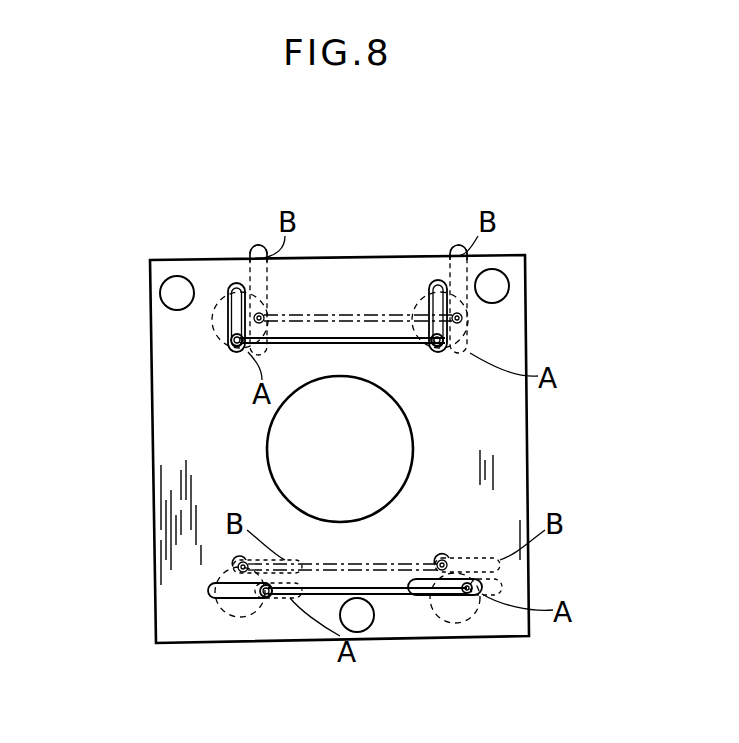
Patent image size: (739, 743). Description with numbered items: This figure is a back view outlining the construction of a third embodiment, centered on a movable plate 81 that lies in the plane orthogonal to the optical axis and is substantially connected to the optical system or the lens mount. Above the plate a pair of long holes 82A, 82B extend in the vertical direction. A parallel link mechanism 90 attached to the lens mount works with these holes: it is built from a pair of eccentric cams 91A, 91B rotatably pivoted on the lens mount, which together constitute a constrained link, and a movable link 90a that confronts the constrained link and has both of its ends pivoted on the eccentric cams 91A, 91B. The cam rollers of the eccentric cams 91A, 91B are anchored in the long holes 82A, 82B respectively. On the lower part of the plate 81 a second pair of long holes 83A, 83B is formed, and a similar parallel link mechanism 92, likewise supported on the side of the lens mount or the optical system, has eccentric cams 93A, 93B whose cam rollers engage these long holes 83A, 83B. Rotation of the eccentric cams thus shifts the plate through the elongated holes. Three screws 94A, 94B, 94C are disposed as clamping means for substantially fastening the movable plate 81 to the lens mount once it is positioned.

The movable plate 81 is at (527, 448).
The long hole 82A is at (237, 352).
The long hole 82B is at (440, 355).
The long hole 83A is at (222, 600).
The long hole 83B is at (455, 608).
The parallel link mechanism 90 is at (340, 312).
The movable link 90a is at (400, 344).
The eccentric cam 91A is at (230, 340).
The eccentric cam 91B is at (464, 318).
The parallel link mechanism 92 is at (385, 585).
The eccentric cam 93A is at (265, 598).
The eccentric cam 93B is at (500, 585).
The screw 94A is at (158, 285).
The screw 94B is at (510, 283).
The screw 94C is at (365, 622).